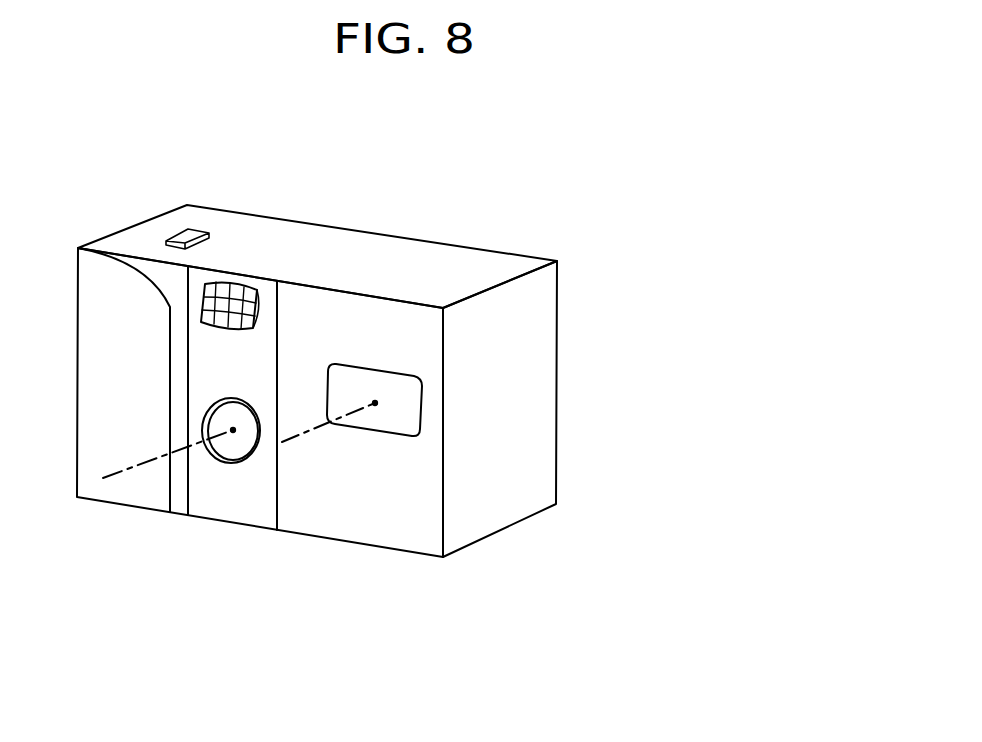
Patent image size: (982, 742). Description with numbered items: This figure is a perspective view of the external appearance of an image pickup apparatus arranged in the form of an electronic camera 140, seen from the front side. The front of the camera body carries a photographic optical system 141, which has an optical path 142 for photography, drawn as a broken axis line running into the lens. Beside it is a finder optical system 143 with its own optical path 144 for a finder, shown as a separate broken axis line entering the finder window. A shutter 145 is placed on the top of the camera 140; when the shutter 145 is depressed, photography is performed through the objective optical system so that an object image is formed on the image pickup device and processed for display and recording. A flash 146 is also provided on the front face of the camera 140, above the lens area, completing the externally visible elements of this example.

The electronic camera 140 is at (581, 477).
The photographic optical system 141 is at (236, 453).
The optical path for photography 142 is at (125, 470).
The finder optical system 143 is at (397, 417).
The optical path for a finder 144 is at (307, 430).
The shutter 145 is at (190, 228).
The flash 146 is at (253, 295).